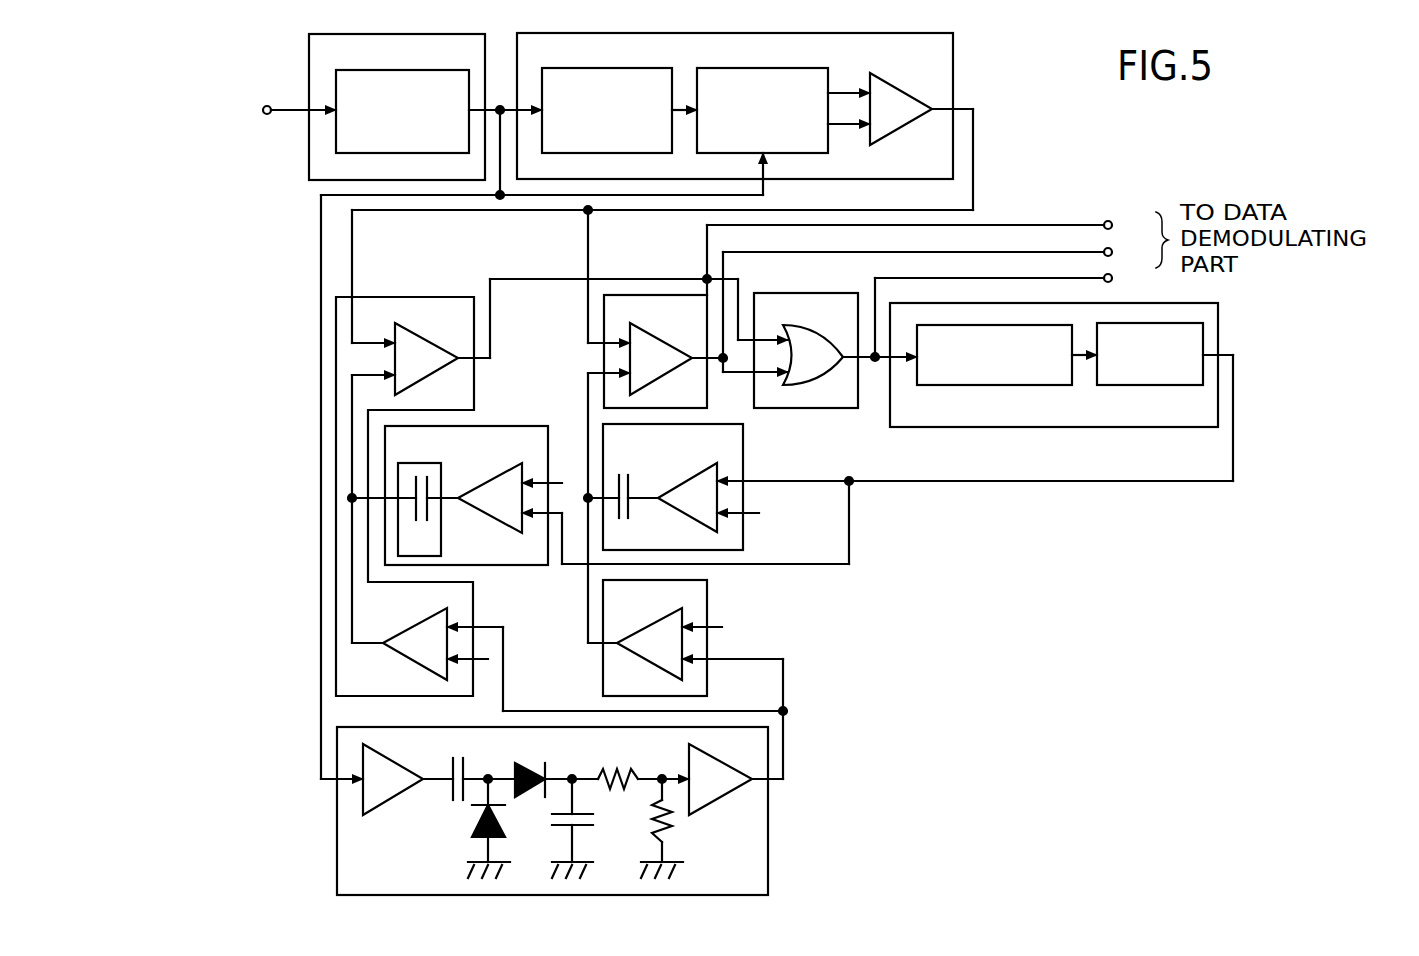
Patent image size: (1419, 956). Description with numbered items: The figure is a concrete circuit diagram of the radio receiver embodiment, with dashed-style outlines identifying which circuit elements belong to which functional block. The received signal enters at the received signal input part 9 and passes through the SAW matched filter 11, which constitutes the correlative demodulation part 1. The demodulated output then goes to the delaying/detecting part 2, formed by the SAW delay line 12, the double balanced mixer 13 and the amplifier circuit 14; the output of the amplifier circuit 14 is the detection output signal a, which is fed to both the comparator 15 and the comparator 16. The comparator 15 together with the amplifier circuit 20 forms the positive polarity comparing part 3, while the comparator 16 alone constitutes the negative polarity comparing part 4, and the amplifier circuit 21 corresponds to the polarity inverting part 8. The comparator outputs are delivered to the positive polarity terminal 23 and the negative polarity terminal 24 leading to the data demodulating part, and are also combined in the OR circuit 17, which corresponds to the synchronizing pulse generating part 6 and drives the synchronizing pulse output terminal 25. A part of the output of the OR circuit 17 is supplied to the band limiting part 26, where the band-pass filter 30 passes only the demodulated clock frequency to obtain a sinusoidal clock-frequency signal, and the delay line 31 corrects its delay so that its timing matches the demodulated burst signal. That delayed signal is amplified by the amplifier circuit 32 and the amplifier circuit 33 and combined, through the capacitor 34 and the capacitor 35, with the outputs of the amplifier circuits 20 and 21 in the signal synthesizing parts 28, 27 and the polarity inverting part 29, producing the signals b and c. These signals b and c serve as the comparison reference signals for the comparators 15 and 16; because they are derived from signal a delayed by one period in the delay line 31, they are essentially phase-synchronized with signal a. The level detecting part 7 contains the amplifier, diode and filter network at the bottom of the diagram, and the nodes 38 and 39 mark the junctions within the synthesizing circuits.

The correlative demodulation part 1 is at (309, 71).
The delaying/detecting part 2 is at (953, 75).
The positive polarity comparing part 3 is at (383, 297).
The negative polarity comparing part 4 is at (707, 390).
The synchronizing pulse generating part 6 is at (833, 408).
The level detecting part 7 is at (768, 850).
The polarity inverting part 8 is at (707, 592).
The received signal input part 9 is at (263, 110).
The SAW matched filter 11 is at (418, 70).
The SAW delay line 12 is at (610, 68).
The double balanced mixer 13 is at (778, 68).
The amplifier circuit 14 is at (896, 84).
The comparator 15 is at (418, 336).
The comparator 16 is at (653, 336).
The OR circuit 17 is at (806, 338).
The amplifier circuit 20 is at (425, 620).
The amplifier circuit 21 is at (662, 620).
The positive polarity terminal 23 is at (1128, 225).
The negative polarity terminal 24 is at (1128, 252).
The synchronizing pulse output terminal 25 is at (1128, 279).
The band limiting part 26 is at (1105, 427).
The signal synthesizing part 27 is at (743, 455).
The signal synthesizing part 28 is at (424, 477).
The polarity inverting part 29 is at (508, 426).
The band-pass filter 30 is at (995, 385).
The delay line 31 is at (1148, 385).
The amplifier circuit 32 is at (488, 480).
The amplifier circuit 33 is at (690, 480).
The capacitor 34 is at (420, 520).
The capacitor 35 is at (620, 453).
The node 38 is at (452, 505).
The node 39 is at (652, 505).
The signal a is at (973, 148).
The signal b is at (372, 644).
The signal c is at (588, 603).